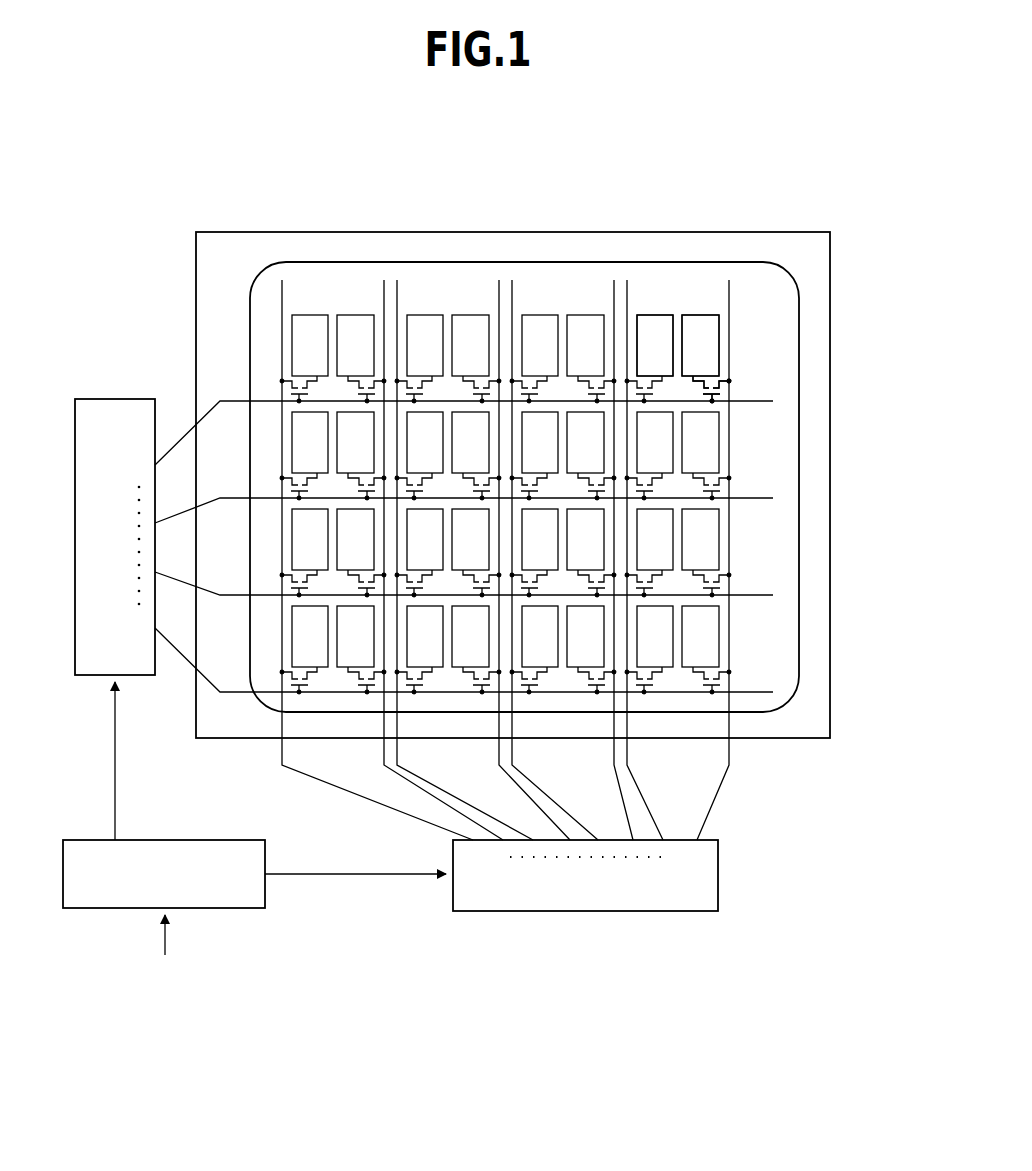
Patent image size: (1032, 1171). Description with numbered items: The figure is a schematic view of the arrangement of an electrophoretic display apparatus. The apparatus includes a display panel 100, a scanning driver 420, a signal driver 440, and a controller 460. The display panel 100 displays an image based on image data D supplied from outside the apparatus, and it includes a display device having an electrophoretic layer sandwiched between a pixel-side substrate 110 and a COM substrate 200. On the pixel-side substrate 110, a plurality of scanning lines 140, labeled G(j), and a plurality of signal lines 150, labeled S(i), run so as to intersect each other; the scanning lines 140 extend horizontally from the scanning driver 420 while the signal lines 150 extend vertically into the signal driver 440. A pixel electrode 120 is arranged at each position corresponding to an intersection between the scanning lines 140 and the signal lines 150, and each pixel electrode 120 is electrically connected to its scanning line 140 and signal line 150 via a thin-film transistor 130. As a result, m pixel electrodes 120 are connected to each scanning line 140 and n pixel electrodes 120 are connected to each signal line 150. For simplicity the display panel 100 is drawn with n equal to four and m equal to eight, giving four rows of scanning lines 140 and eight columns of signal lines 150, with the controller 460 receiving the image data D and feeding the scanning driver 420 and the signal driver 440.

The display panel 100 is at (522, 482).
The pixel-side substrate 110 is at (305, 232).
The pixel electrode 120 is at (653, 315).
The thin-film transistor 130 is at (725, 380).
The scanning line 140 is at (748, 403).
The signal line 150 is at (732, 315).
The COM substrate 200 is at (249, 303).
The scanning driver 420 is at (115, 398).
The signal driver 440 is at (593, 912).
The controller 460 is at (210, 840).